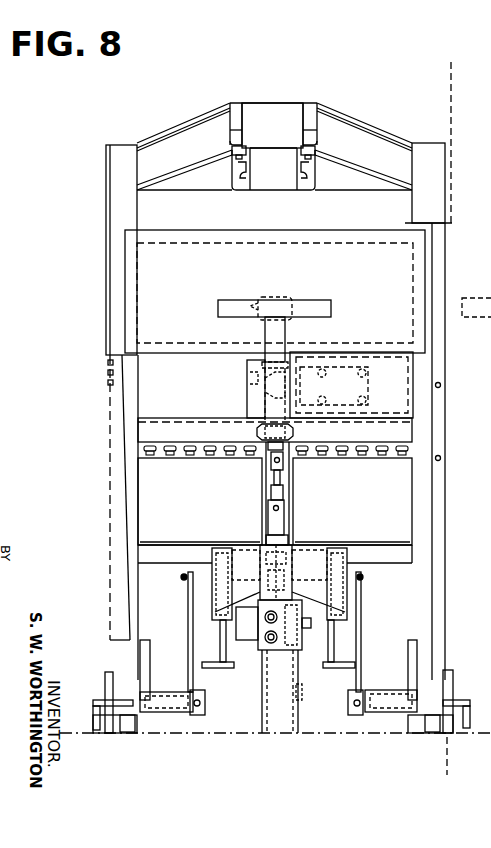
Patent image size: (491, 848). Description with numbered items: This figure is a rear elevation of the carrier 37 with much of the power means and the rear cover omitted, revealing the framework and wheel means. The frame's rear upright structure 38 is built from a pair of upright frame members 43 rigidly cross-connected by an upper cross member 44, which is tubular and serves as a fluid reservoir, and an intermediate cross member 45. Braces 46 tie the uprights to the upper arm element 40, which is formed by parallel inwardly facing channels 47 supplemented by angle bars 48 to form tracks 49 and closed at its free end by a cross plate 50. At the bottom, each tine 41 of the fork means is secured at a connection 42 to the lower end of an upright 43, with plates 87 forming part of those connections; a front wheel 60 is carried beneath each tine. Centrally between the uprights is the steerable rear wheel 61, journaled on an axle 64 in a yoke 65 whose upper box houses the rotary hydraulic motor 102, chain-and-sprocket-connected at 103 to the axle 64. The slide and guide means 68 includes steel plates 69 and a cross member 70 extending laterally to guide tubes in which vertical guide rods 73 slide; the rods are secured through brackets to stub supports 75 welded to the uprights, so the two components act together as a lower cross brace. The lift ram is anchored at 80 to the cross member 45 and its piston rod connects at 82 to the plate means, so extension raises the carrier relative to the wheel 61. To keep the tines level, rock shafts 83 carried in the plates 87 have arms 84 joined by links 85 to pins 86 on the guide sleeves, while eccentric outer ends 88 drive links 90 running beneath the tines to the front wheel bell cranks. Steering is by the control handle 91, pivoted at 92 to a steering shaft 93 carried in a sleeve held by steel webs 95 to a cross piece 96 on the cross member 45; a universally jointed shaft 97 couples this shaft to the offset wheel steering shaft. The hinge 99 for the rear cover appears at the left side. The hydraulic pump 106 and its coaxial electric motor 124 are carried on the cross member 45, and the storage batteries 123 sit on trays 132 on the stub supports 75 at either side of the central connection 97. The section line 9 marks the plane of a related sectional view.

The section line 9- 9 is at (415, 85).
The carrier 37 is at (101, 178).
The upright structure 38 is at (106, 296).
The upper arm element 40 is at (268, 103).
The tines 41 is at (95, 700).
The tine rear-end connection 42 is at (105, 676).
The upright frame member 43 is at (112, 268).
The upper cross member 44 is at (196, 222).
The intermediate cross member 45 is at (178, 418).
The braces 46 is at (186, 123).
The channels 47 is at (236, 105).
The angle bars 48 is at (238, 170).
The tracks 49 is at (232, 150).
The cross plate 50 is at (288, 113).
The front wheel 60 is at (112, 733).
The steerable rear wheel 61 is at (272, 733).
The axle 64 is at (262, 700).
The yoke 65 is at (302, 700).
The slide and guide means 68 is at (318, 541).
The steel plates 69 is at (222, 553).
The cross member 70 is at (258, 542).
The vertical guide rod 73 is at (228, 668).
The stub support 75 is at (153, 549).
The cylinder anchorage 80 is at (297, 434).
The piston rod connection 82 is at (294, 545).
The rock shaft 83 is at (203, 718).
The arm 84 is at (192, 718).
The link 85 is at (188, 603).
The pin 86 is at (181, 577).
The plates 87 is at (142, 676).
The eccentric outer end 88 is at (146, 714).
The link 90 is at (127, 733).
The control handle 91 is at (334, 305).
The handle pivot 92 is at (283, 305).
The steering shaft 93 is at (265, 328).
The steel webs 95 is at (260, 366).
The cross piece 96 is at (247, 372).
The universally jointed shaft 97 is at (283, 470).
The hinge 99 is at (108, 372).
The rotary hydraulic motor 102 is at (240, 629).
The chain and sprocket connection 103 is at (297, 733).
The hydraulic pump 106 is at (304, 367).
The storage batteries 123 is at (180, 488).
The electric motor 124 is at (401, 358).
The battery trays 132 is at (178, 545).